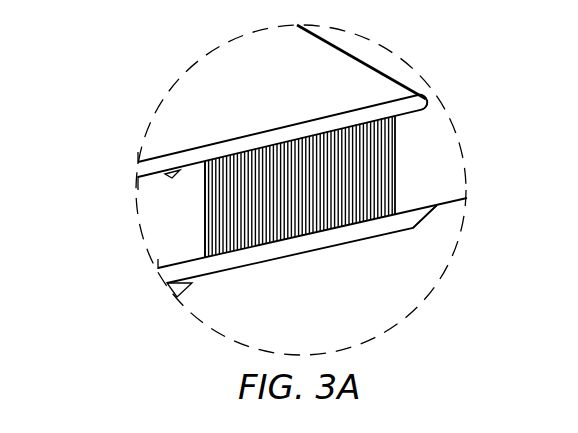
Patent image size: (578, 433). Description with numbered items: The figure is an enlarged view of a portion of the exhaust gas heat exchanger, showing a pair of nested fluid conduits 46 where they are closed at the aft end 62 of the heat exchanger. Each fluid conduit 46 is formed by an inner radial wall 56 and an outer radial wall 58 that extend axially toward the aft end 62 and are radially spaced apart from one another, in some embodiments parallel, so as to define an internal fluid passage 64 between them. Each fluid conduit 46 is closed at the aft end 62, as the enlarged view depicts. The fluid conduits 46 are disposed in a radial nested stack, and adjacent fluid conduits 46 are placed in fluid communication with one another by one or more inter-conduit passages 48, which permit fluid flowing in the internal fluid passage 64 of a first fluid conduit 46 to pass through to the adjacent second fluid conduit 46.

The nested fluid conduit 46 is at (423, 96).
The inter-conduit passage 48 is at (357, 183).
The inner radial wall 56 is at (210, 145).
The outer radial wall 58 is at (180, 170).
The aft end 62 is at (454, 188).
The internal fluid passage 64 is at (380, 112).